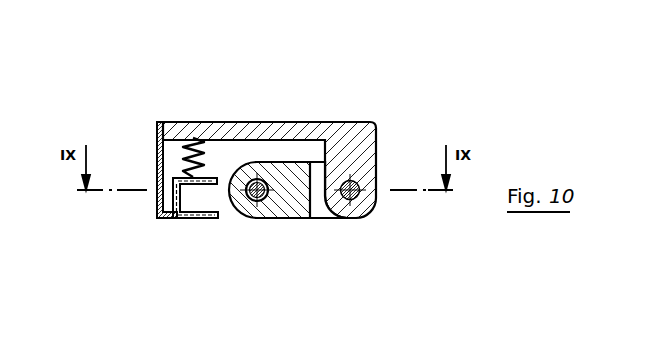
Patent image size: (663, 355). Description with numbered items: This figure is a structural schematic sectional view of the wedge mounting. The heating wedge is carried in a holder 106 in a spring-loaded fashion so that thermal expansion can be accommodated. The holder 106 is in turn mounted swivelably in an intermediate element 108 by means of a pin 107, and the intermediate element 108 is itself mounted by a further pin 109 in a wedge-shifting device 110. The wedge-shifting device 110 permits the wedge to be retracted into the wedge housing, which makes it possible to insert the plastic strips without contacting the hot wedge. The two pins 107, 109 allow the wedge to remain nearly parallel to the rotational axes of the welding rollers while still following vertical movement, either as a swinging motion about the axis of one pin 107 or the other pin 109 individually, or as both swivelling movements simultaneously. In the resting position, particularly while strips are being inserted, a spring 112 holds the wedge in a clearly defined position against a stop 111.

The holder 106 is at (178, 217).
The pin 107 is at (254, 200).
The intermediate element 108 is at (289, 194).
The pin 109 is at (353, 195).
The wedge-shifting device 110 is at (346, 133).
The stop 111 is at (158, 203).
The spring 112 is at (188, 139).